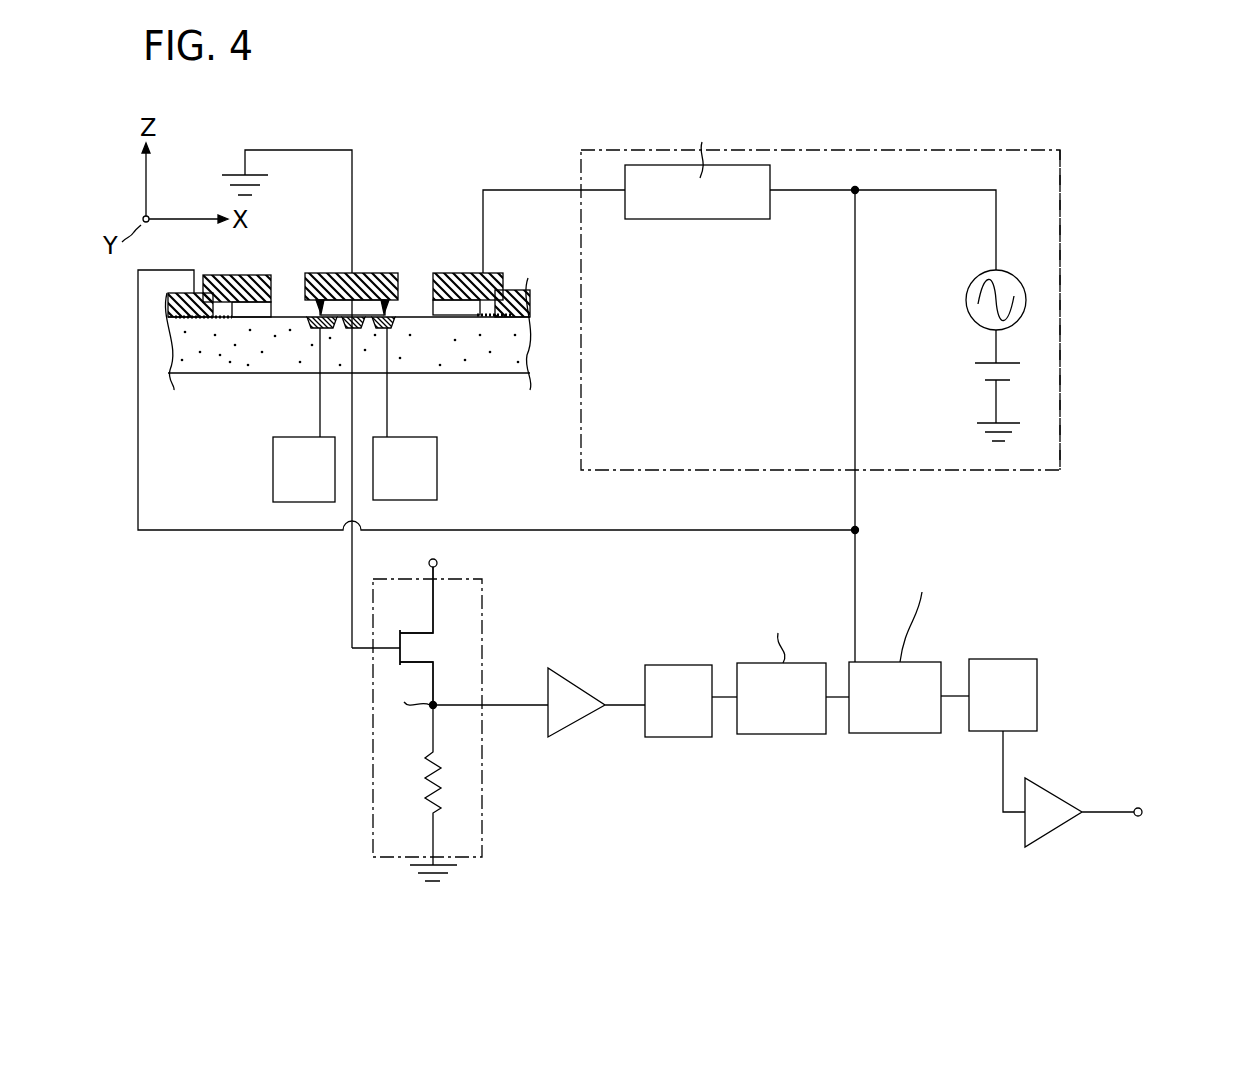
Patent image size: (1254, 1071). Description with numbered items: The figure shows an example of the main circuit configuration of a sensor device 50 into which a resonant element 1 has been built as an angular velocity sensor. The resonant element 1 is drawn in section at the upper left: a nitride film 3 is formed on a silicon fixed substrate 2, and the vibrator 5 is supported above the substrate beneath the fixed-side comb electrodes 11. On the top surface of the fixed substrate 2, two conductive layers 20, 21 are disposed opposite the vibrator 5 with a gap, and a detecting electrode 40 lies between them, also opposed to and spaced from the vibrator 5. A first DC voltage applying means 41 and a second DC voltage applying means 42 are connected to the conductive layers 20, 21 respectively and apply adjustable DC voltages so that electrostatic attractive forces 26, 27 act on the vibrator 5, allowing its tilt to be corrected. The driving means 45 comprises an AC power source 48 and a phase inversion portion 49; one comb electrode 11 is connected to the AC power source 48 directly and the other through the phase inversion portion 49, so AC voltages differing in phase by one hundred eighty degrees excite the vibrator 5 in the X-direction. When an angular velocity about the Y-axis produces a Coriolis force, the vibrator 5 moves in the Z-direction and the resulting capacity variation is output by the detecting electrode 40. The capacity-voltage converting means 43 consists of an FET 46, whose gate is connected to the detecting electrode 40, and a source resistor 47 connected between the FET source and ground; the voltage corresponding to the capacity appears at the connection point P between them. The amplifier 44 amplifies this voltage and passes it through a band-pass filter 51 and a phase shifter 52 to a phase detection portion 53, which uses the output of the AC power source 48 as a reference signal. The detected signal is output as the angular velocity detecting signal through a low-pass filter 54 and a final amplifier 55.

The resonant element 1 is at (378, 196).
The fixed substrate 2 is at (423, 373).
The nitride film 3 is at (210, 322).
The vibrator 5 is at (388, 273).
The fixed-side comb electrode 11 is at (219, 274).
The conductive layer 20 is at (307, 330).
The conductive layer 21 is at (388, 330).
The electrostatic attractive force 26 is at (318, 310).
The electrostatic attractive force 27 is at (388, 305).
The detecting electrode 40 is at (354, 330).
The first DC voltage applying means 41 is at (273, 470).
The second DC voltage applying means 42 is at (437, 468).
The capacity-voltage converting means 43 is at (435, 720).
The amplifier 44 is at (577, 685).
The driving means 45 is at (900, 475).
The FET 46 is at (436, 650).
The source resistor 47 is at (425, 790).
The AC power source 48 is at (966, 300).
The phase inversion portion 49 is at (693, 220).
The sensor device 50 is at (1115, 305).
The band-pass filter 51 is at (690, 737).
The phase shifter 52 is at (795, 734).
The phase detection portion 53 is at (872, 733).
The low-pass filter 54 is at (1030, 659).
The amplifier 55 is at (1052, 792).